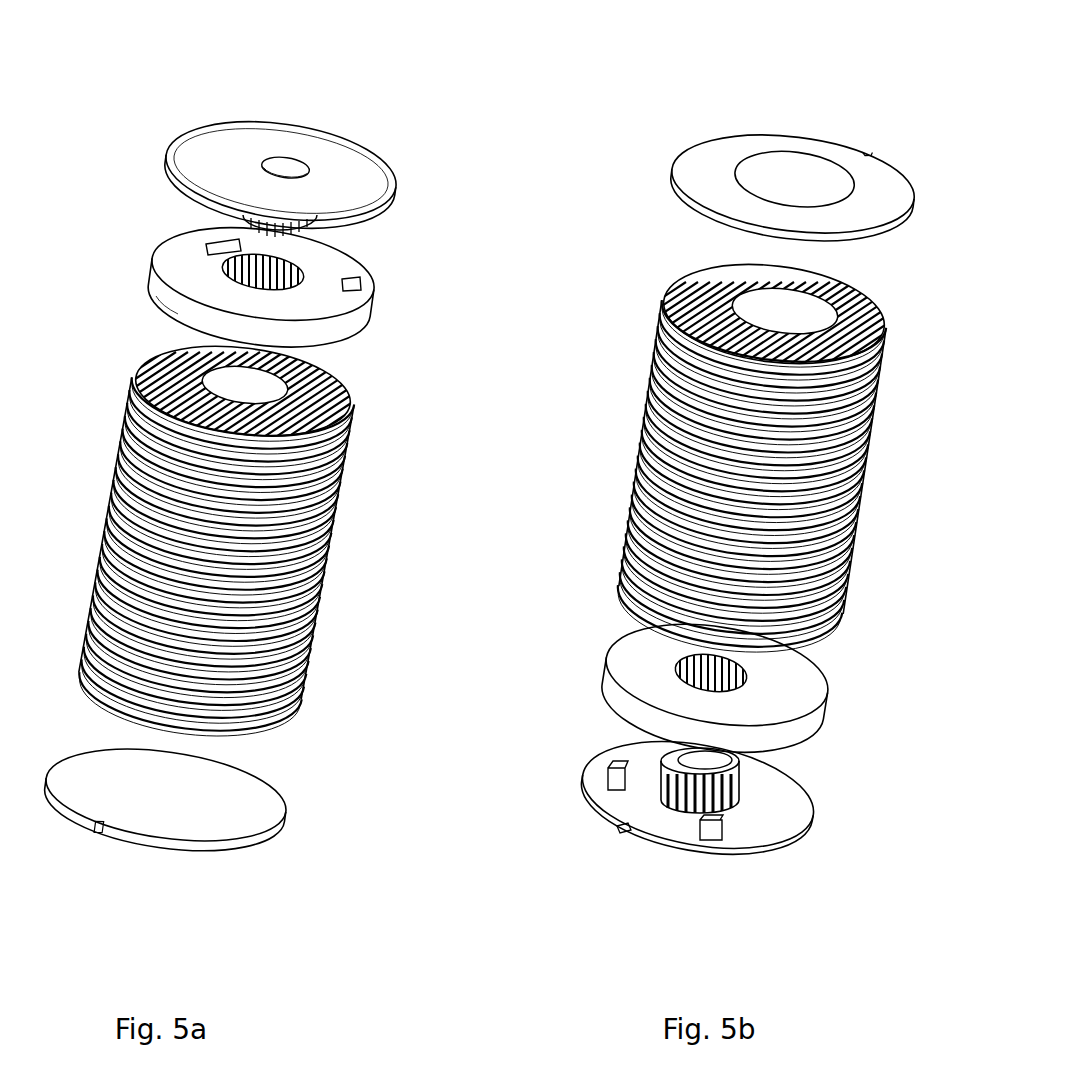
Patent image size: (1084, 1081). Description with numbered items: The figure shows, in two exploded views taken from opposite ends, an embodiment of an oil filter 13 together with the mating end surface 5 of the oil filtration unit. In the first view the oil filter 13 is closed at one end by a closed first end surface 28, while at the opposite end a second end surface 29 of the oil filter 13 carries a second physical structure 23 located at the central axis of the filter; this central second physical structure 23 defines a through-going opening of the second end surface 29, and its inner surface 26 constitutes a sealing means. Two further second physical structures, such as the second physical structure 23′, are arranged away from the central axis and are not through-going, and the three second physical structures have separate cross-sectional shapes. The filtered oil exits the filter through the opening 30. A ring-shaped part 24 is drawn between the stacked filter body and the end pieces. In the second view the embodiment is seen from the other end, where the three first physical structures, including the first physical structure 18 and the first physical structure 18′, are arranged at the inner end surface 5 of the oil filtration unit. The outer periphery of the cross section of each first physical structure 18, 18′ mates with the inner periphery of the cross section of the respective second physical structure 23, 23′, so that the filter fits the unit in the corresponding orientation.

In FIG. 5A, the base plate 5 is at (390, 200).
In FIG. 5B, the base plate 5 is at (748, 822).
In FIG. 5A, the stack of discs 13 is at (323, 537).
In FIG. 5B, the stack of discs 13 is at (640, 407).
In FIG. 5B, the projection 18 is at (670, 778).
In FIG. 5B, the projection 18′ is at (705, 833).
In FIG. 5A, the recess 23 is at (283, 278).
In FIG. 5B, the recess 23 is at (673, 652).
In FIG. 5A, the recess 23′ is at (360, 275).
In FIG. 5A, the spacer ring 24 is at (220, 273).
In FIG. 5B, the spacer ring 24 is at (663, 660).
In FIG. 5A, the central opening 26 is at (220, 257).
In FIG. 5B, the central opening 26 is at (743, 668).
In FIG. 5A, the cover disc 28 is at (217, 853).
In FIG. 5B, the cover disc 28 is at (707, 157).
In FIG. 5A, the ring wall 29 is at (183, 313).
In FIG. 5A, the hub 30 is at (277, 168).
In FIG. 5B, the hub 30 is at (707, 753).